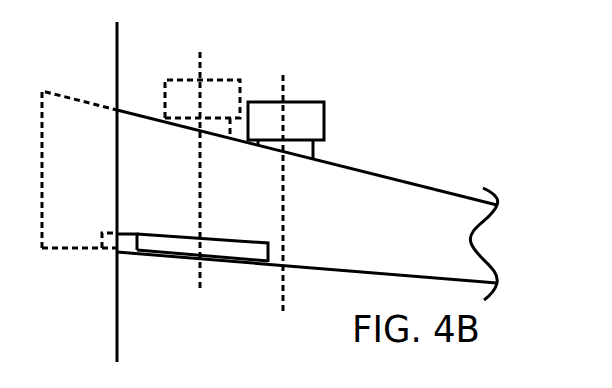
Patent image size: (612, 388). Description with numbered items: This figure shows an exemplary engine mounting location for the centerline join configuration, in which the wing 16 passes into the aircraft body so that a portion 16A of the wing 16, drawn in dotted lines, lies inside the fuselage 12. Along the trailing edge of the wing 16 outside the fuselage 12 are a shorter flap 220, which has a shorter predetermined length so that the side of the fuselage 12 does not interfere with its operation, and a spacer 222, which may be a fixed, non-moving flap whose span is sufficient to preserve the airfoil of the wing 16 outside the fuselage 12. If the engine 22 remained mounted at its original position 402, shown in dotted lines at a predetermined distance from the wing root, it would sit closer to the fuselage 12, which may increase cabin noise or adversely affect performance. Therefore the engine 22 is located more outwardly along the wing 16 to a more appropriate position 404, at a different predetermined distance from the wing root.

The fuselage 12 is at (102, 336).
The wing 16 is at (470, 236).
The portion of the wing 16A is at (97, 152).
The engine 22 is at (324, 122).
The shorter flap 220 is at (227, 257).
The spacer 222 is at (127, 253).
The position 402 is at (202, 159).
The position 404 is at (283, 182).